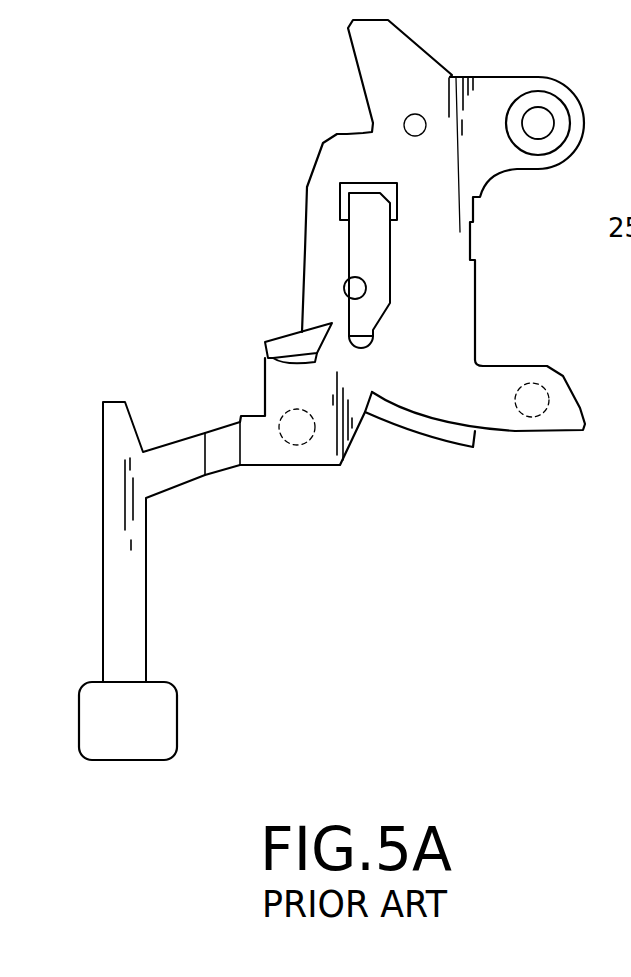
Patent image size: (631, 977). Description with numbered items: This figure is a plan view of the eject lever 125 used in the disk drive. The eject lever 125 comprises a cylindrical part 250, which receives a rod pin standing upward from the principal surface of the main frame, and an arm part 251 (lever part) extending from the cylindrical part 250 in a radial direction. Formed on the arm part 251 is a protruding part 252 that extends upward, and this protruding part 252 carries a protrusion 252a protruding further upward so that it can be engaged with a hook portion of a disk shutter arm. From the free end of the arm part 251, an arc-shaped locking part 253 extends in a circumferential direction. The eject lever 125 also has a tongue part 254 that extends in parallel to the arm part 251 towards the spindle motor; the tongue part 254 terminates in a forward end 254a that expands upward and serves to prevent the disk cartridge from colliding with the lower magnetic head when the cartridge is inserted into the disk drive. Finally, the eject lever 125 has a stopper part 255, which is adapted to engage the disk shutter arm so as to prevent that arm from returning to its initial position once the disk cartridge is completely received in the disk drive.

The eject lever 125 is at (427, 50).
The cylindrical part 250 is at (546, 92).
The arm part 251 is at (457, 287).
The protruding part 252 is at (370, 313).
The protrusion 252a is at (344, 289).
The arc-shaped locking part 253 is at (550, 423).
The tongue part 254 is at (140, 620).
The forward end 254a is at (167, 720).
The stopper part 255 is at (290, 336).